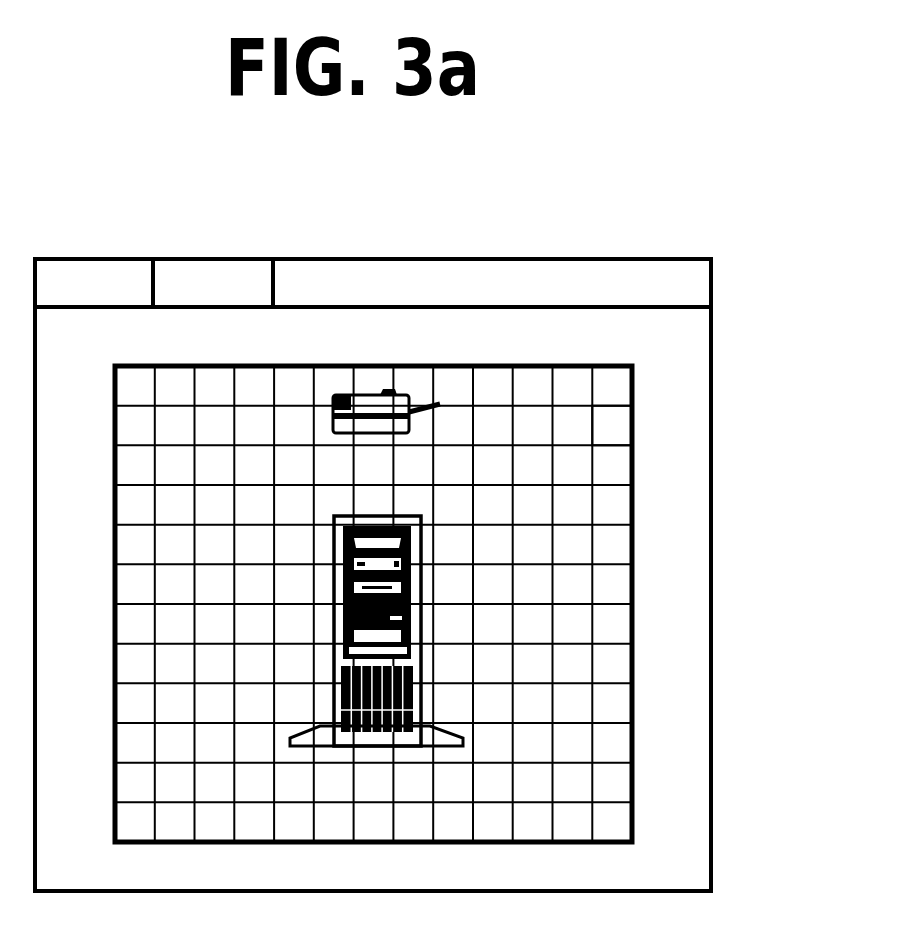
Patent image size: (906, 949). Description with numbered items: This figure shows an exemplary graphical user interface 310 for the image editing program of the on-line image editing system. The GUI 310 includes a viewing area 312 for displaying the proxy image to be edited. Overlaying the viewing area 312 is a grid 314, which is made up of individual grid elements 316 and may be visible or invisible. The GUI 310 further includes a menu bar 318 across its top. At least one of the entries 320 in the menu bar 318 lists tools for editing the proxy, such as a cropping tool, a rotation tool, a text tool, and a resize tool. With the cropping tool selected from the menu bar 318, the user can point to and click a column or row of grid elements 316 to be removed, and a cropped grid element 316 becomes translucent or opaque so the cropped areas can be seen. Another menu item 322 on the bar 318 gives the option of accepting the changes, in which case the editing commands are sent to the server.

The graphical user interface 310 is at (451, 248).
The viewing area 312 is at (606, 364).
The grid 314 is at (606, 483).
The grid element 316 is at (610, 426).
The menu bar 318 is at (590, 287).
The entry 320 is at (255, 268).
The menu item 322 is at (137, 268).